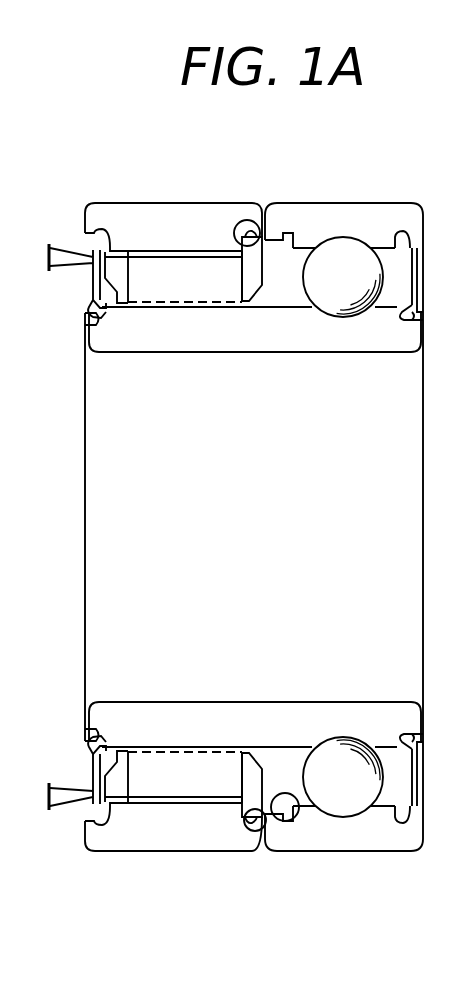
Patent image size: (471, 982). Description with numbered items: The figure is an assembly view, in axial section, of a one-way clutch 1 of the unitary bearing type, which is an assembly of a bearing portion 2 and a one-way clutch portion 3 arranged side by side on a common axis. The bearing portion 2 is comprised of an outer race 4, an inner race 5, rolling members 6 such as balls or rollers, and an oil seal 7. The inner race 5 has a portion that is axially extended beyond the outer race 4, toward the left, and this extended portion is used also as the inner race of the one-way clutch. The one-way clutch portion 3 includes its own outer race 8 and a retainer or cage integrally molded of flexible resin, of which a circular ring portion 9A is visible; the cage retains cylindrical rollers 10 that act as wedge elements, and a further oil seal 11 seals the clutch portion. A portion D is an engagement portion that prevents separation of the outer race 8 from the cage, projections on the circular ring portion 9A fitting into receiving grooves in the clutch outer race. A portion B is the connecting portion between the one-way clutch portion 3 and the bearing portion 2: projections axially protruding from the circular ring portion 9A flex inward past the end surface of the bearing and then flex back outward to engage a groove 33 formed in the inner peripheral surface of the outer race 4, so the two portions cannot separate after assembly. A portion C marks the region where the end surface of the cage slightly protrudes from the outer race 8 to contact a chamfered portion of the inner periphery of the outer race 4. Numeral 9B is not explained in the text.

The one-way clutch of the unitary bearing type 1 is at (448, 416).
The bearing portion 2 is at (369, 177).
The one-way clutch portion 3 is at (214, 178).
The outer race 4 is at (407, 208).
The inner race 5 is at (300, 345).
The rolling members 6 is at (340, 300).
The oil seal 7 is at (424, 251).
The outer race 8 is at (149, 210).
The circular ring portion 9A is at (247, 277).
The flange ring 9B is at (122, 265).
The cylindrical rollers 10 is at (183, 265).
The oil seal 11 is at (56, 247).
The groove 33 is at (290, 217).
The connecting portion B is at (289, 845).
The portion C is at (253, 845).
The engagement portion D is at (254, 208).